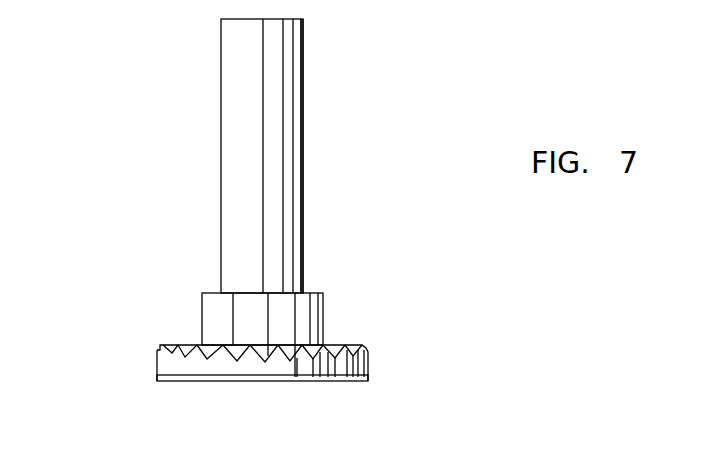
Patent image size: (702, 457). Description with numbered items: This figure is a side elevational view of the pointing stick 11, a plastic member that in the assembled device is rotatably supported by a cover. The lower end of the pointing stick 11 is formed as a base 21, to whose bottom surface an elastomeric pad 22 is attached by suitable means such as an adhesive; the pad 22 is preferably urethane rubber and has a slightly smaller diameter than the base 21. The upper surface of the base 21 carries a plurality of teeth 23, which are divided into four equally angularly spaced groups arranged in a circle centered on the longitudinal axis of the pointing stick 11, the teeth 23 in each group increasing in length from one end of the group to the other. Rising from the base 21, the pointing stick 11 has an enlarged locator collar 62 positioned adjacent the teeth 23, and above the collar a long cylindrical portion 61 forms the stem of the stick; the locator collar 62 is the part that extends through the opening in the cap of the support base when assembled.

The pointing stick 11 is at (302, 175).
The cylindrical portion 61 is at (302, 81).
The locator collar 62 is at (202, 312).
The base 21 is at (238, 323).
The elastomeric pad 22 is at (157, 382).
The teeth 23 is at (362, 348).